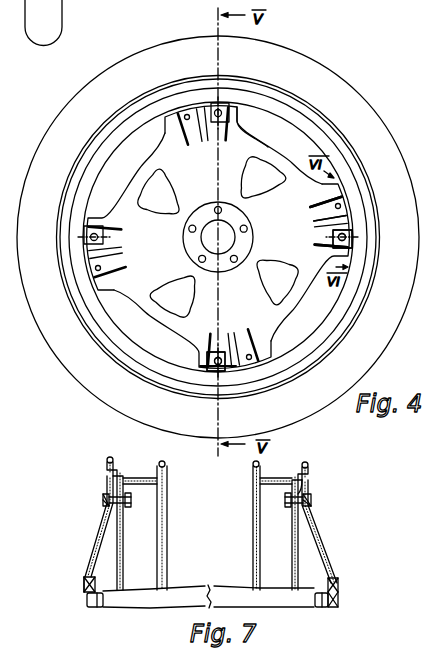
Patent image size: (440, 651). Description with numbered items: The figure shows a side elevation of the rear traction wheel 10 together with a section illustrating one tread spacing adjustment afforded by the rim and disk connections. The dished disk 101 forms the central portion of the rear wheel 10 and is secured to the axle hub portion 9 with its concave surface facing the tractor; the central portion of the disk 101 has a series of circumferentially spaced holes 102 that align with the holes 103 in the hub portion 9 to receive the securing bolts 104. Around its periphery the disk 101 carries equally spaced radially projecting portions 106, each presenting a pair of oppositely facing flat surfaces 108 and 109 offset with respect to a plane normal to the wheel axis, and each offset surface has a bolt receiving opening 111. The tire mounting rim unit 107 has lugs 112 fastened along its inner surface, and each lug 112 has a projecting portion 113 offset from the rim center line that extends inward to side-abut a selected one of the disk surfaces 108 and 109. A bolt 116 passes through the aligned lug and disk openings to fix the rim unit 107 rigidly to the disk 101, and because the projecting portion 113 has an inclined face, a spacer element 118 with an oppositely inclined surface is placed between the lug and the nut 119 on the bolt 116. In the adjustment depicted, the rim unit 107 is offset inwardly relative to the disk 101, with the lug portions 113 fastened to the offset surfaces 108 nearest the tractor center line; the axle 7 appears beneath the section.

In FIG. 4, the rear wheel 10 is at (80, 379).
In FIG. 7, the axle 7 is at (195, 588).
In FIG. 7, the axle hub portion 9 is at (92, 608).
In FIG. 4, the disk 101 is at (148, 156).
In FIG. 7, the disk 101 is at (94, 549).
In FIG. 7, the holes 102 is at (84, 582).
In FIG. 7, the holes 103 is at (92, 583).
In FIG. 4, the securing bolts 104 is at (189, 229).
In FIG. 4, the radially projecting portions 106 is at (238, 113).
In FIG. 4, the tire mounting rim unit 107 is at (356, 306).
In FIG. 7, the tire mounting rim unit 107 is at (107, 464).
In FIG. 4, the flat surface 108 is at (331, 241).
In FIG. 4, the flat surface 109 is at (325, 201).
In FIG. 4, the bolt receiving opening 111 is at (328, 216).
In FIG. 4, the lugs 112 is at (212, 372).
In FIG. 7, the lugs 112 is at (138, 476).
In FIG. 4, the projecting portion 113 is at (212, 353).
In FIG. 7, the projecting portion 113 is at (305, 487).
In FIG. 4, the bolt 116 is at (331, 236).
In FIG. 7, the bolt 116 is at (103, 500).
In FIG. 7, the spacer element 118 is at (128, 507).
In FIG. 7, the nut 119 is at (287, 508).